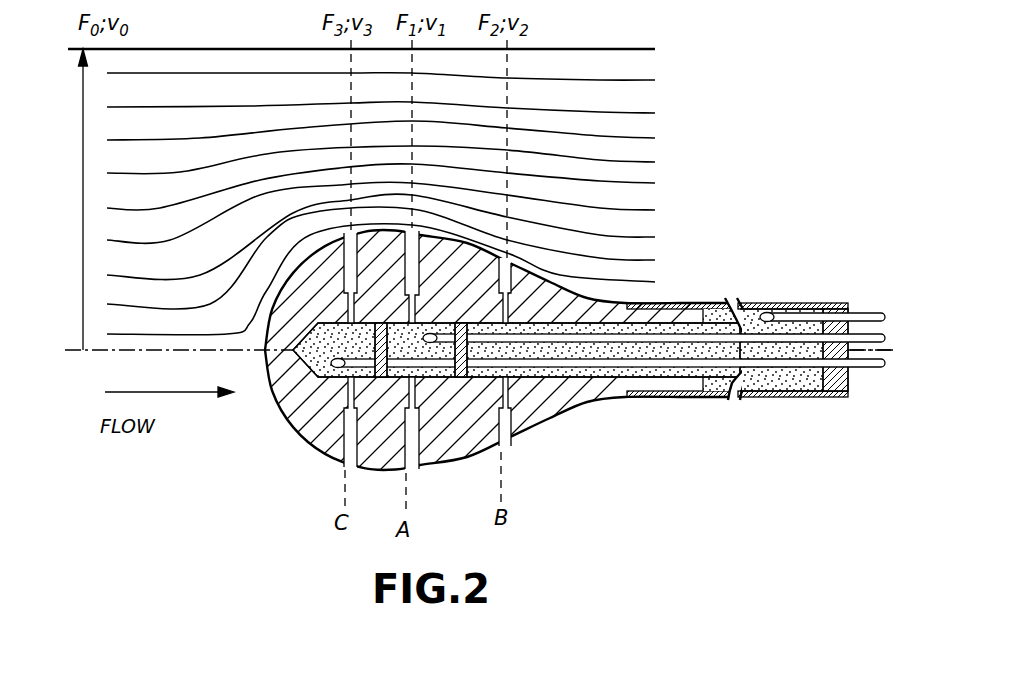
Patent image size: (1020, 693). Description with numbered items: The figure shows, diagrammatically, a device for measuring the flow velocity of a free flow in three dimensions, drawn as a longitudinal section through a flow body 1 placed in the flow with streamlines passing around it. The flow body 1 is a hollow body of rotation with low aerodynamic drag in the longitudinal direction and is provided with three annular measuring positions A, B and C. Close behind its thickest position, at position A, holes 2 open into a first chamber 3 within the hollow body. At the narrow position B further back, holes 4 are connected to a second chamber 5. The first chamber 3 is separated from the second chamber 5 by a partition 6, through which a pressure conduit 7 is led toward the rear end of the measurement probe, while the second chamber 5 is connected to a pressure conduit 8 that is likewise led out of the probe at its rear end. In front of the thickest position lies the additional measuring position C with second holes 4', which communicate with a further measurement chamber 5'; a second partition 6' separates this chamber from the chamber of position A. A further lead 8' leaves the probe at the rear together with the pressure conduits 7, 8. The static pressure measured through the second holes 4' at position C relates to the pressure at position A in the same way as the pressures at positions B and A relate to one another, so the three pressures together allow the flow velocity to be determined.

The flow body 1 is at (300, 398).
The holes 2 is at (410, 447).
The first chamber 3 is at (412, 333).
The holes 4 is at (513, 427).
The second holes 4' is at (357, 437).
The second chamber 5 is at (516, 379).
The measurement chamber 5' is at (328, 400).
The partition 6 is at (468, 407).
The second partition 6' is at (386, 415).
The pressure conduit 7 is at (890, 338).
The pressure conduit 8 is at (822, 294).
The lead wire 8' is at (812, 388).